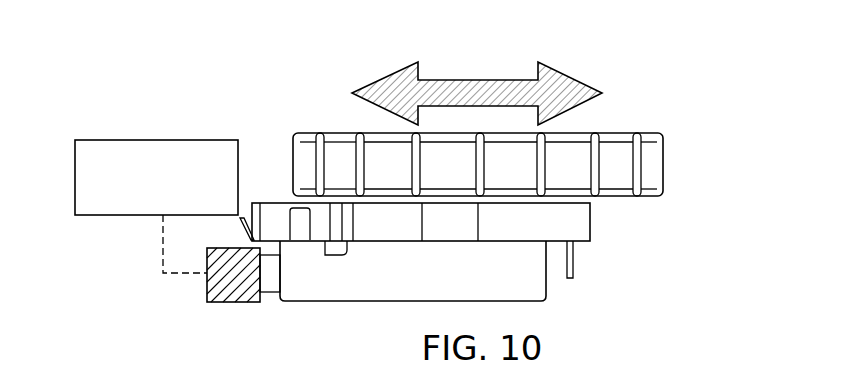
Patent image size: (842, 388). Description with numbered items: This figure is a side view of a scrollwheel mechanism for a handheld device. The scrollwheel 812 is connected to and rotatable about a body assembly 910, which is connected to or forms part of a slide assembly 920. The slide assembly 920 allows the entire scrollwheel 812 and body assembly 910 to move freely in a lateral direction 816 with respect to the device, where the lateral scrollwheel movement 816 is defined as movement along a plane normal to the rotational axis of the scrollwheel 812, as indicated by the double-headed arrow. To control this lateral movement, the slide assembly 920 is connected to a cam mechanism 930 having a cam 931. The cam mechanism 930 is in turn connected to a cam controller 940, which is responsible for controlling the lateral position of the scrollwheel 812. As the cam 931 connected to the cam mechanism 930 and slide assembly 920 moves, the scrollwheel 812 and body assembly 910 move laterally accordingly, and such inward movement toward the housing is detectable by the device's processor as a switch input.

The lateral scrollwheel movement 816 is at (448, 80).
The scrollwheel 812 is at (663, 166).
The body assembly 910 is at (590, 222).
The slide assembly 920 is at (546, 292).
The cam mechanism 930 is at (230, 301).
The cam 931 is at (267, 298).
The cam controller 940 is at (73, 191).